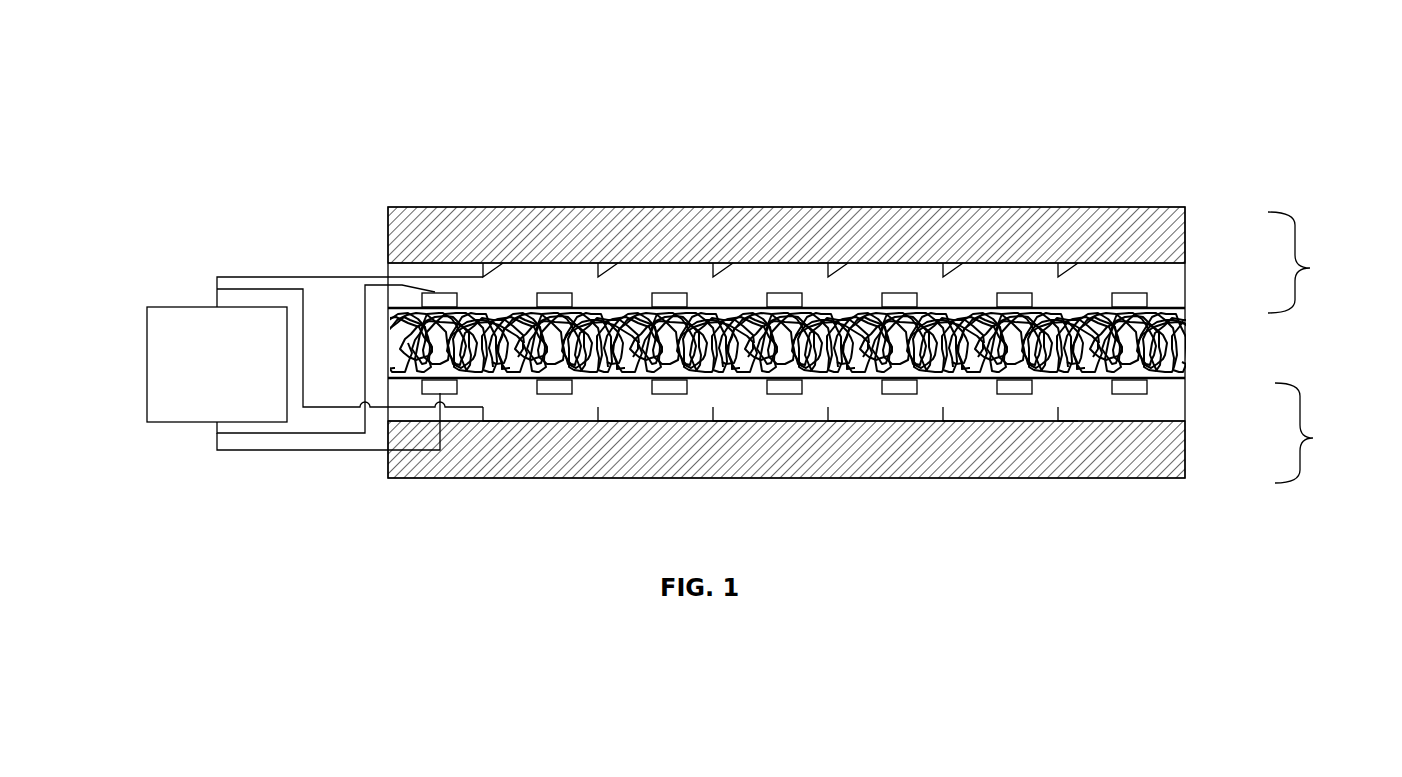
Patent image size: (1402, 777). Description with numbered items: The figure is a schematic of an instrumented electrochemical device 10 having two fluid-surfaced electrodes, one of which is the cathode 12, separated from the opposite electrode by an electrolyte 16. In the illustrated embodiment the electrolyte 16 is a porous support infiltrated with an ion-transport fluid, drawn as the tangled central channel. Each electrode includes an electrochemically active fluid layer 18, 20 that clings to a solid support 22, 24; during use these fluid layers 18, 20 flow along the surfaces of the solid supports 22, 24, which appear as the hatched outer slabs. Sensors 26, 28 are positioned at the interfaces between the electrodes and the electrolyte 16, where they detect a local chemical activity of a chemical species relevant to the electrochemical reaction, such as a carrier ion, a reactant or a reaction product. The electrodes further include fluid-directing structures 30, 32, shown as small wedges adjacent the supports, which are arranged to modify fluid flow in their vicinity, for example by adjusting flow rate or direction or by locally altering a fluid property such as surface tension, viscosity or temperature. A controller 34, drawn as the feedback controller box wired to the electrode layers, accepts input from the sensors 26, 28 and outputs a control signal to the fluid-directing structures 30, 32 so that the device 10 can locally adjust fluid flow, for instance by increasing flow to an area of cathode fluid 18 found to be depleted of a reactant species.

The instrumented electrochemical device 10 is at (882, 280).
The cathode 12 is at (1329, 347).
The electrolyte 16 is at (1187, 370).
The electrochemically active fluid layer 18 is at (888, 405).
The electrochemically active fluid layer 20 is at (660, 277).
The solid support 22 is at (1032, 455).
The solid support 24 is at (1038, 207).
The sensor 26 is at (440, 387).
The sensor 28 is at (441, 300).
The fluid-directing structure 30 is at (490, 409).
The fluid-directing structure 32 is at (495, 268).
The controller 34 is at (217, 337).